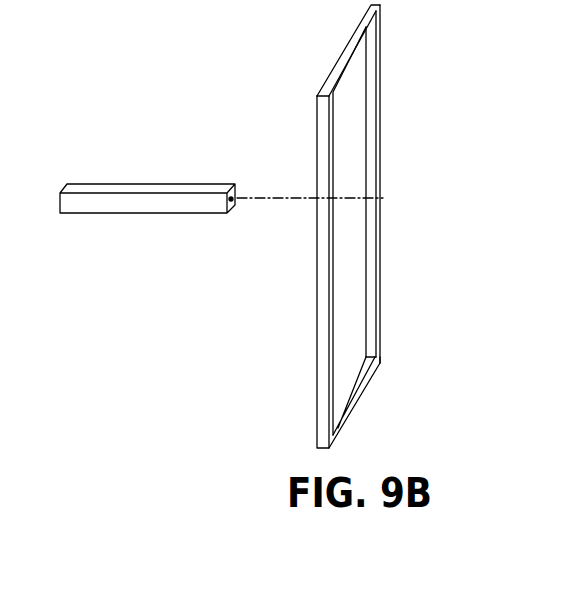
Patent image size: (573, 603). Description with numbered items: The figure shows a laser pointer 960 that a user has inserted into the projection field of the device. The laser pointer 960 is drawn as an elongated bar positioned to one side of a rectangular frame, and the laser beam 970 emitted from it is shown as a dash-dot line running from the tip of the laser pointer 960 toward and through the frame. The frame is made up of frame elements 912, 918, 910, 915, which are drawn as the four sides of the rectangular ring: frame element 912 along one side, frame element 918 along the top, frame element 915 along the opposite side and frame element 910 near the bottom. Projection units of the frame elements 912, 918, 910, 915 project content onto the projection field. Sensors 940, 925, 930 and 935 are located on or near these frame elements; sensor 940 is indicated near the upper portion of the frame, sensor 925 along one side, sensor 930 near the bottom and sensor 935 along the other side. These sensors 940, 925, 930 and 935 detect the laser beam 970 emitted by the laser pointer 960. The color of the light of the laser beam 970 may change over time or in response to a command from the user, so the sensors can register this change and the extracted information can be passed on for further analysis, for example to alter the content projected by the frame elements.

The frame element 910 is at (375, 372).
The frame element 912 is at (317, 333).
The frame element 915 is at (372, 128).
The frame element 918 is at (335, 73).
The sensor 925 is at (370, 238).
The sensor 930 is at (358, 385).
The sensor 935 is at (323, 163).
The sensor 940 is at (350, 55).
The laser pointer 960 is at (128, 184).
The laser beam 970 is at (258, 199).